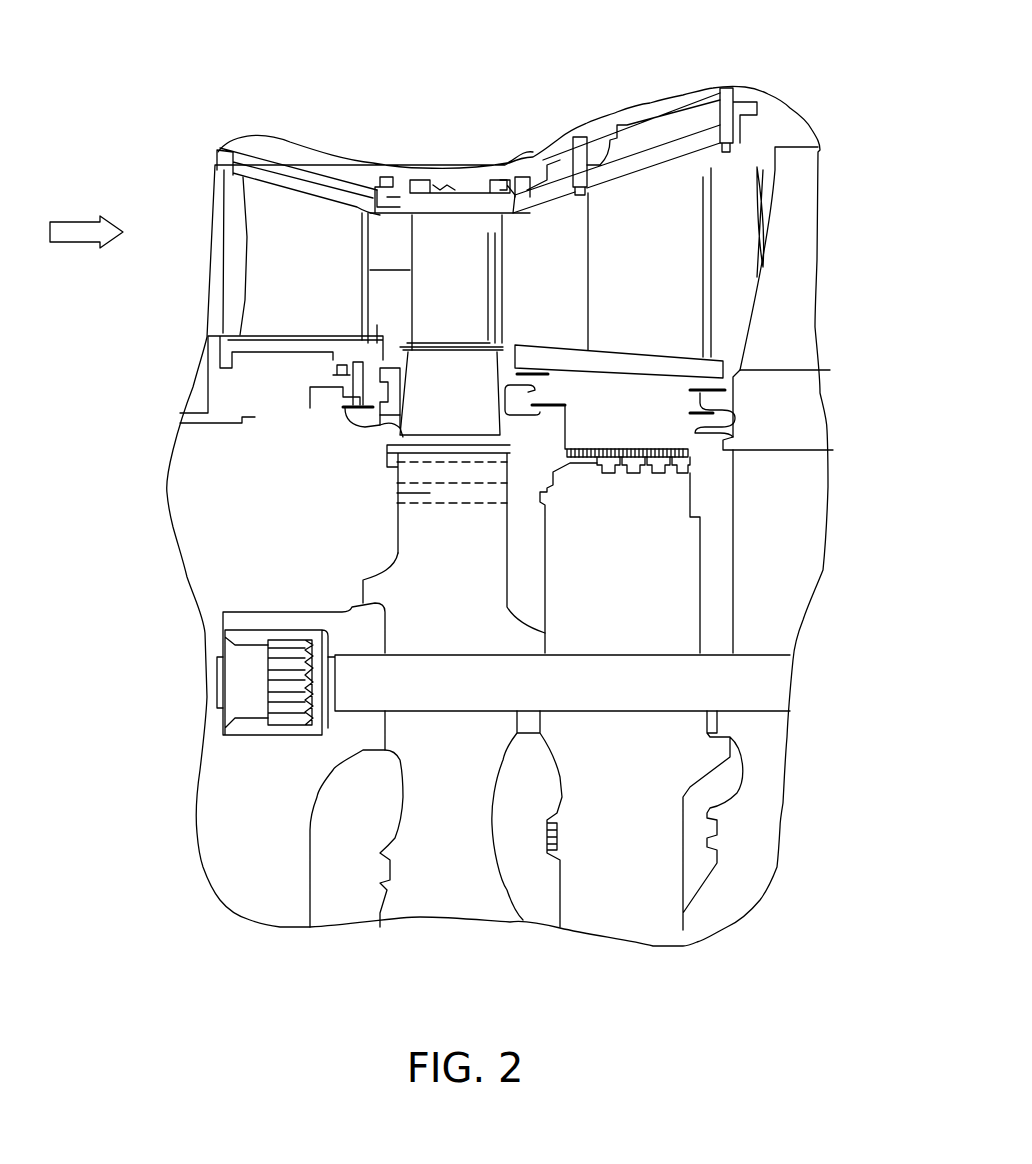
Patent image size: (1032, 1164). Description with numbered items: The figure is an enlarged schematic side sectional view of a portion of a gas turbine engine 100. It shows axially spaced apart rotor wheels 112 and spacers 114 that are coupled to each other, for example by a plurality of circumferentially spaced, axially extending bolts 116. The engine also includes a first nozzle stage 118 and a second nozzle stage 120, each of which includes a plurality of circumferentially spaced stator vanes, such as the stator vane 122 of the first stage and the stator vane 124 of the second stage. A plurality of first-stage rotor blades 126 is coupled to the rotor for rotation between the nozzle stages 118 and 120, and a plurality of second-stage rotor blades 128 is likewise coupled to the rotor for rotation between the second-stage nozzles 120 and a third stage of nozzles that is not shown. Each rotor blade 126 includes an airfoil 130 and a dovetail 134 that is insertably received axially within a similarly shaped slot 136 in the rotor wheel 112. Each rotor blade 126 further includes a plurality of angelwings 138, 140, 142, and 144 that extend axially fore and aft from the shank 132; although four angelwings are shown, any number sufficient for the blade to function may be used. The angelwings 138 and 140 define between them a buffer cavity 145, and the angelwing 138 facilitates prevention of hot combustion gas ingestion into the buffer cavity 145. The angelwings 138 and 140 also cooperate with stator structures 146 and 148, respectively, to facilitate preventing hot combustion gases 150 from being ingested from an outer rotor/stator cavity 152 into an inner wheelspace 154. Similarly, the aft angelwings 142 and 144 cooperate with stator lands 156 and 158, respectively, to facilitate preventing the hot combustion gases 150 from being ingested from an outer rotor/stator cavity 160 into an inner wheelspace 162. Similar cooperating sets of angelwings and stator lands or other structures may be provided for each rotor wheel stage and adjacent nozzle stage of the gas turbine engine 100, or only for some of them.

The gas turbine engine 100 is at (410, 98).
The rotor wheel 112 is at (447, 898).
The spacer 114 is at (614, 920).
The bolt 116 is at (757, 685).
The first nozzle stage 118 is at (280, 218).
The second nozzle stage 120 is at (637, 195).
The stator vane 122 is at (286, 282).
The stator vane 124 is at (613, 297).
The first-stage rotor blade 126 is at (457, 223).
The second-stage rotor blade 128 is at (797, 148).
The airfoil 130 is at (433, 319).
The shank 132 is at (433, 419).
The dovetail 134 is at (390, 500).
The slot 136 is at (380, 486).
The angelwing 138 is at (373, 343).
The angelwing 140 is at (372, 426).
The angelwing 142 is at (510, 378).
The angelwing 144 is at (538, 420).
The buffer cavity 145 is at (378, 389).
The stator structure 146 is at (375, 348).
The stator structure 148 is at (342, 407).
The hot combustion gases 150 is at (73, 223).
The outer rotor/stator cavity 152 is at (366, 272).
The inner wheelspace 154 is at (283, 567).
The stator land 156 is at (600, 350).
The stator land 158 is at (552, 377).
The outer rotor/stator cavity 160 is at (526, 267).
The inner wheelspace 162 is at (518, 552).